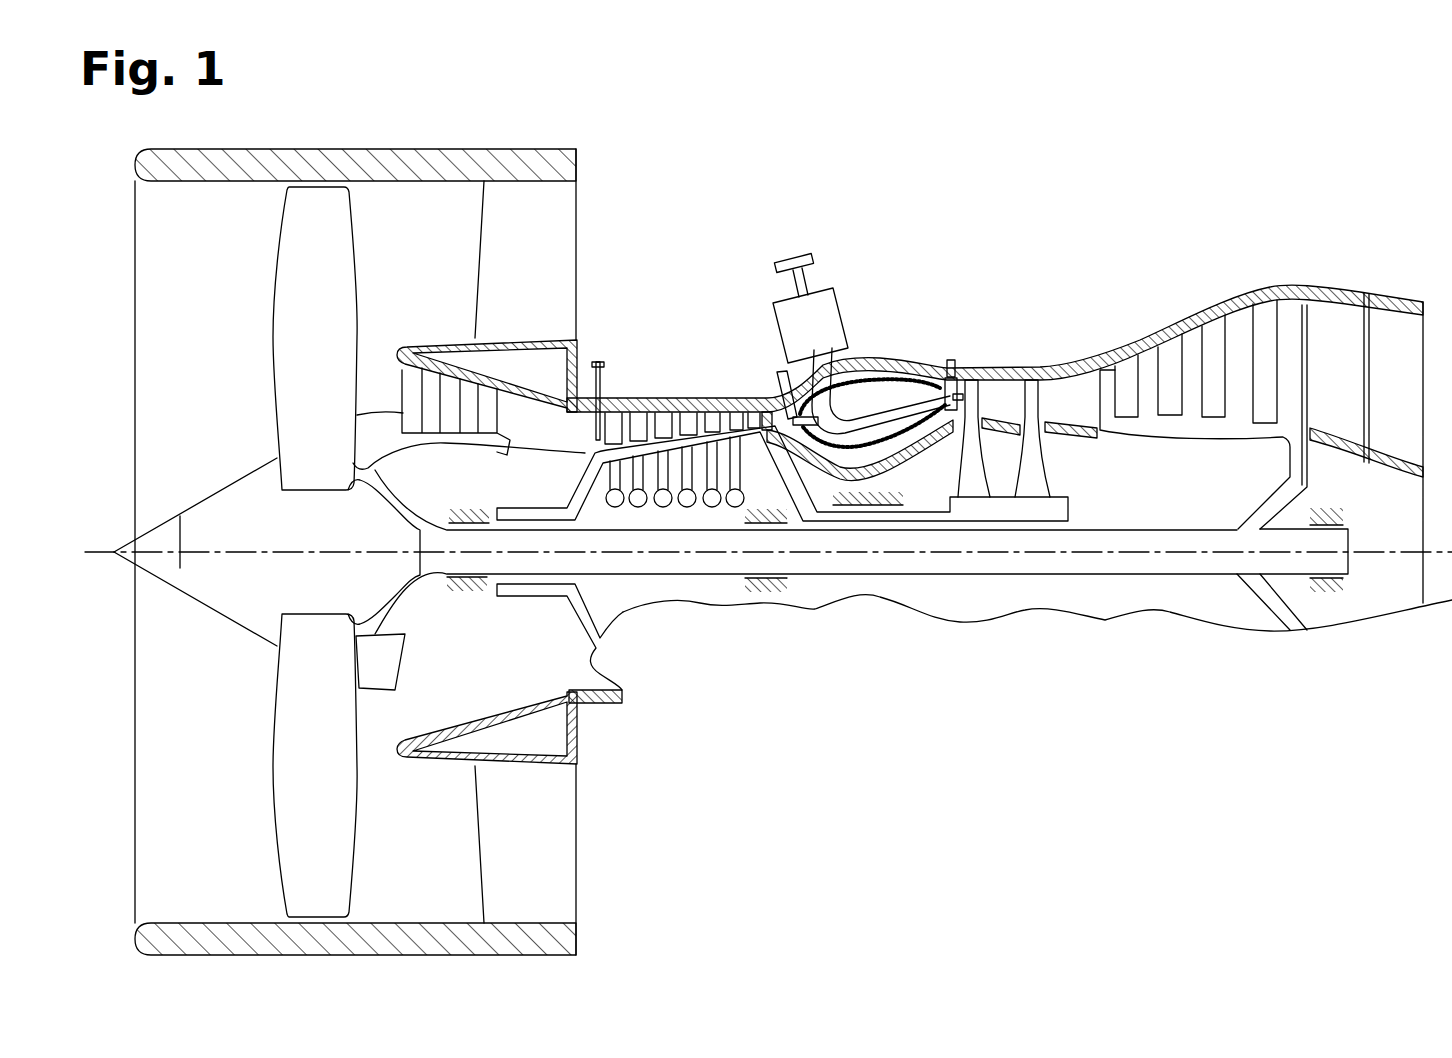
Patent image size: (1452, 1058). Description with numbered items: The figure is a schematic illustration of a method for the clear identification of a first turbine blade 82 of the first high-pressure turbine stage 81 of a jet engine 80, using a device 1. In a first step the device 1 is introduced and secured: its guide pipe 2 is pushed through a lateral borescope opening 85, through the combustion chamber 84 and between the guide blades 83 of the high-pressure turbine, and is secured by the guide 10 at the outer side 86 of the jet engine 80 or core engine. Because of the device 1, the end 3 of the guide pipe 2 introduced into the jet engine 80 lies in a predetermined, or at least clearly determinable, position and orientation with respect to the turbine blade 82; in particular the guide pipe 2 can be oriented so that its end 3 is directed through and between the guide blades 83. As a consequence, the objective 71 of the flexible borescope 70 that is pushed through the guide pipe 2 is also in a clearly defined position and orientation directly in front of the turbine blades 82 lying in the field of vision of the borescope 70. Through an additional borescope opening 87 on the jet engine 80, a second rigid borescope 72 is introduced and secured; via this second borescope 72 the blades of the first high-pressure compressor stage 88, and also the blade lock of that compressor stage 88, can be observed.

The device 1 is at (772, 289).
The guide pipe 2 is at (900, 414).
The end of the guide pipe 3 is at (942, 400).
The guide 10 is at (773, 322).
The flexible borescope 70 is at (799, 256).
The objective 71 is at (964, 397).
The second rigid borescope 72 is at (599, 360).
The jet engine 80 is at (215, 698).
The first high-pressure turbine stage 81 is at (969, 500).
The turbine blade 82 is at (972, 380).
The guide blades 83 is at (935, 368).
The combustion chamber 84 is at (835, 446).
The lateral borescope opening 85 is at (778, 378).
The outer side 86 is at (893, 360).
The additional borescope opening 87 is at (607, 398).
The first high-pressure compressor stage 88 is at (613, 514).